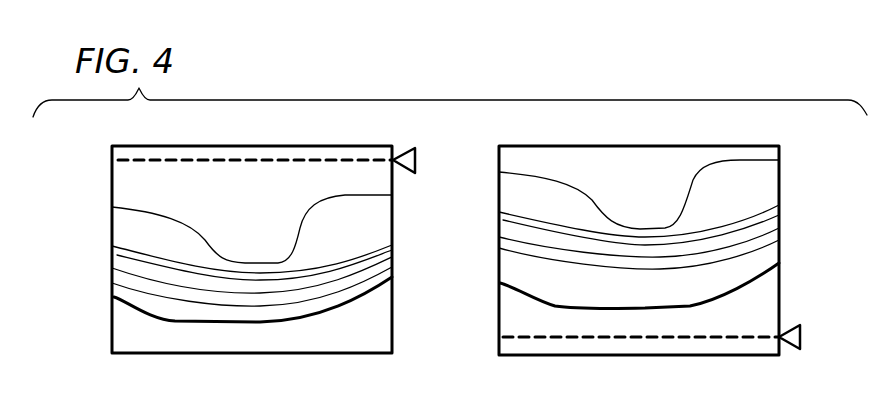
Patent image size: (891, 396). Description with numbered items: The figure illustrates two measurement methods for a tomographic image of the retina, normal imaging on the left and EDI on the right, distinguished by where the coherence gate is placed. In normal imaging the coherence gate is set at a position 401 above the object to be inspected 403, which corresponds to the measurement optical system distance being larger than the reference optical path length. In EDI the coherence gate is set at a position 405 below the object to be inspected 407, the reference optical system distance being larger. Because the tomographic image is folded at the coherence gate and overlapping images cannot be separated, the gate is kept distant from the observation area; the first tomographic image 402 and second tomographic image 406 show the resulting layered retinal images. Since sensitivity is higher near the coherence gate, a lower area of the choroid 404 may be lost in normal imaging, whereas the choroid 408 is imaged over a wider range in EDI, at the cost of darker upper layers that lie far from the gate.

The position above object to be inspected 401 is at (418, 160).
The first tomographic image 402 is at (122, 181).
The object to be inspected 403 is at (338, 262).
The choroid 404 is at (120, 293).
The position below object to be inspected 405 is at (803, 337).
The second tomographic image 406 is at (500, 160).
The object to be inspected 407 is at (735, 230).
The choroid 408 is at (500, 269).